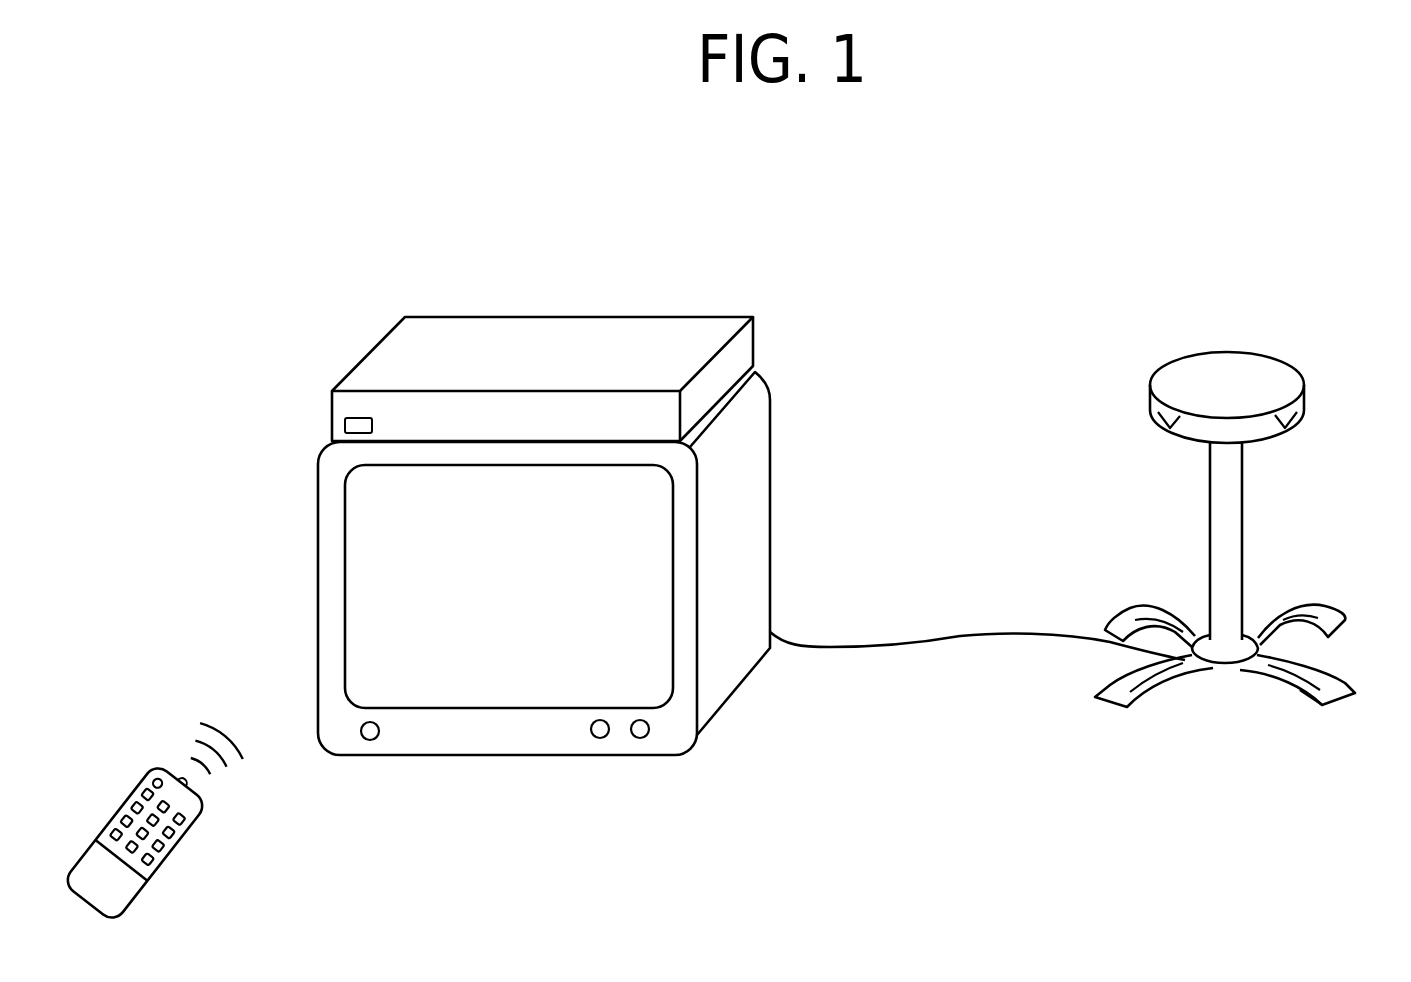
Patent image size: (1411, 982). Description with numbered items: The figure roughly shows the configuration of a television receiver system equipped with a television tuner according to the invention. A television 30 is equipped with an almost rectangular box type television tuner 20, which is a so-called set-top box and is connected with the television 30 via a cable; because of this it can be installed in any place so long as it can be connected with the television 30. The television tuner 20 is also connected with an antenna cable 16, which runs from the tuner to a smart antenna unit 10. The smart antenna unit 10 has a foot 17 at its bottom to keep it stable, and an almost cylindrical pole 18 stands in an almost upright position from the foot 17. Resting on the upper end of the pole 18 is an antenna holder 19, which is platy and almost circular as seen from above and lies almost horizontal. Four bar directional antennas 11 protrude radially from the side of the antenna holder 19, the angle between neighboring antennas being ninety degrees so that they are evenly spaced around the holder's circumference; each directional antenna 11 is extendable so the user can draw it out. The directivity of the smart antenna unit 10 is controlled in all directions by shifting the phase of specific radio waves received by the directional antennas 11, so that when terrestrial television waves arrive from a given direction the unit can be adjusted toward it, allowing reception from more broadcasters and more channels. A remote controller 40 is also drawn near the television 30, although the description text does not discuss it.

The smart antenna unit 10 is at (1327, 608).
The directional antennas 11 is at (1290, 348).
The antenna cable 16 is at (943, 640).
The foot 17 is at (1293, 675).
The pole 18 is at (1242, 515).
The antenna holder 19 is at (1223, 352).
The television tuner 20 is at (697, 315).
The television 30 is at (768, 517).
The remote controller 40 is at (173, 857).